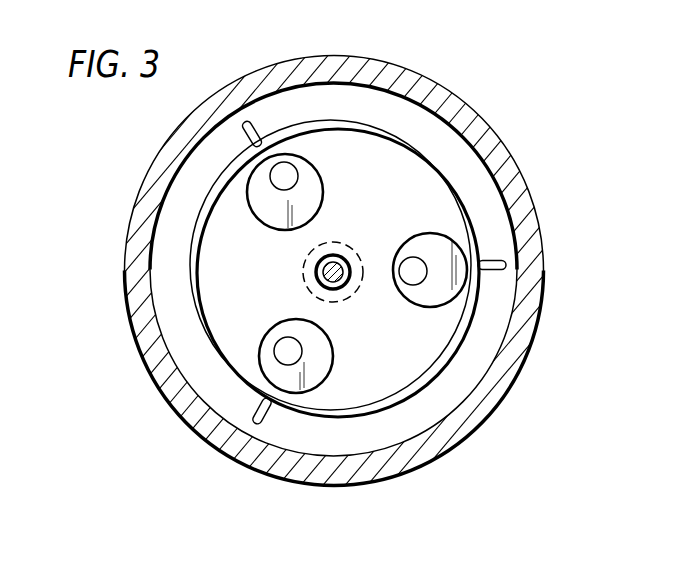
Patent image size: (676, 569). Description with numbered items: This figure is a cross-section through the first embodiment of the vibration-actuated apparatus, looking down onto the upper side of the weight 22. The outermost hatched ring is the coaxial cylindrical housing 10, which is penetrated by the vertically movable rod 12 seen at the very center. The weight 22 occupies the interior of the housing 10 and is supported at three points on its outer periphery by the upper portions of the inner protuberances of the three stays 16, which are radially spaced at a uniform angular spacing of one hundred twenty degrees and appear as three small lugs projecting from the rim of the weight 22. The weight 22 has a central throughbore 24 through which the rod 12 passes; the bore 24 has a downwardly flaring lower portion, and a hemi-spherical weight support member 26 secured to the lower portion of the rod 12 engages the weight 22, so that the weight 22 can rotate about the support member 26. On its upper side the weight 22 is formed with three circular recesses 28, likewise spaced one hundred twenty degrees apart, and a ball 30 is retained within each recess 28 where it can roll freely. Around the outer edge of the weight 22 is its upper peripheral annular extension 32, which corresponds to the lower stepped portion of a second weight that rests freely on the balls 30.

The cylindrical housing 10 is at (554, 221).
The rod 12 is at (333, 262).
The stays 16 is at (258, 128).
The weight 22 is at (447, 178).
The central throughbore 24 is at (341, 283).
The weight support member 26 is at (351, 265).
The circular recesses 28 is at (314, 184).
The ball 30 is at (275, 185).
The upper peripheral annular extension 32 is at (397, 130).